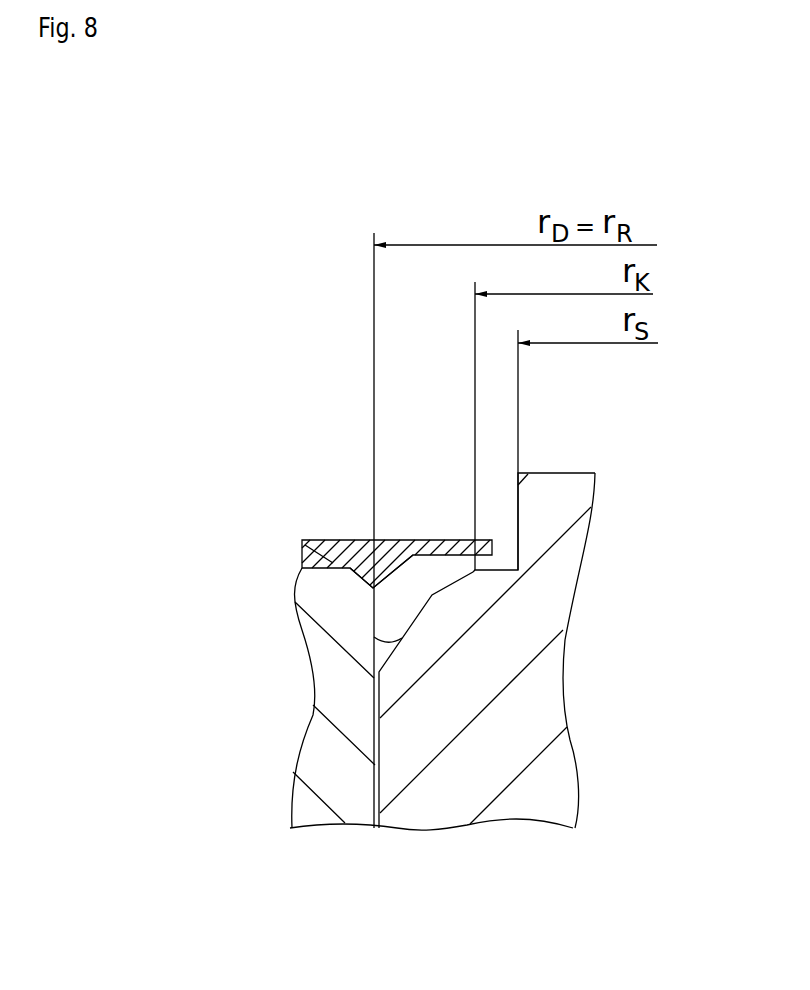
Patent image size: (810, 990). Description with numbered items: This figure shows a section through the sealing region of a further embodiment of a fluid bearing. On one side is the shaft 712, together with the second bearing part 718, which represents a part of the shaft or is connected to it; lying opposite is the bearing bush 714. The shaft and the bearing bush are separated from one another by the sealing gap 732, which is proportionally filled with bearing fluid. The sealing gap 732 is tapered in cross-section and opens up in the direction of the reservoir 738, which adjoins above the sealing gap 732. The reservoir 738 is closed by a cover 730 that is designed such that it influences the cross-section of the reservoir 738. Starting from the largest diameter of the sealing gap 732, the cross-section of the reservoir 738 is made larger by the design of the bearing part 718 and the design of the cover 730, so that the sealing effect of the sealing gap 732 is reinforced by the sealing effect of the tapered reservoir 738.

The bearing bush 714 is at (335, 613).
The cover 730 is at (353, 568).
The reservoir 738 is at (403, 602).
The shaft 712 is at (547, 535).
The second bearing part 718 is at (462, 773).
The sealing gap 732 is at (385, 648).